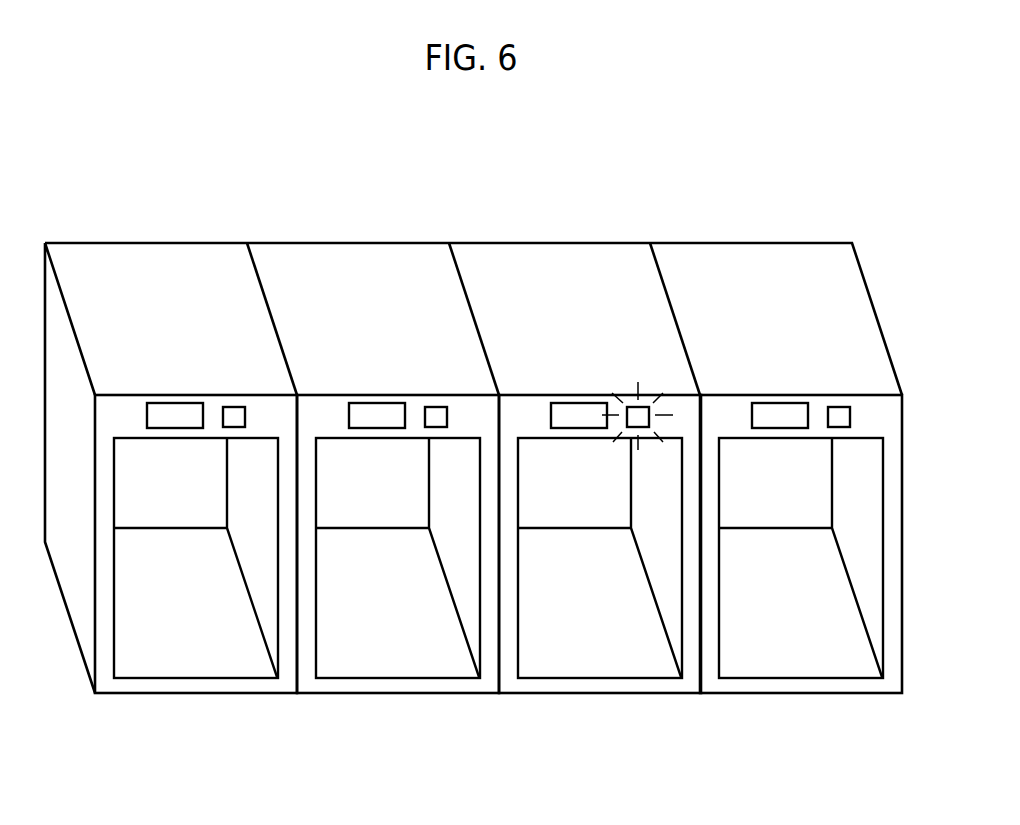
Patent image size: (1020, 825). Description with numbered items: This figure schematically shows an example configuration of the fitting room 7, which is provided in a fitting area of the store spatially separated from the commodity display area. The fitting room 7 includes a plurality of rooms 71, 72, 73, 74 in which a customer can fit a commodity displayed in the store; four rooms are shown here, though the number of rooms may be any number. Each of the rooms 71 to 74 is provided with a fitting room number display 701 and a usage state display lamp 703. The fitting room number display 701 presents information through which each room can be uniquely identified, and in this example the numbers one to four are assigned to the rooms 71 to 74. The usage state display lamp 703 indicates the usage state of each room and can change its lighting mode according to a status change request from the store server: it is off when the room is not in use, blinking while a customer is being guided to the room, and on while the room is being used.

The fitting room 7 is at (812, 140).
The room 71 is at (203, 693).
The room 72 is at (396, 693).
The room 73 is at (598, 693).
The room 74 is at (801, 693).
The fitting room number display 701 is at (158, 415).
The usage state display lamp 703 is at (234, 415).